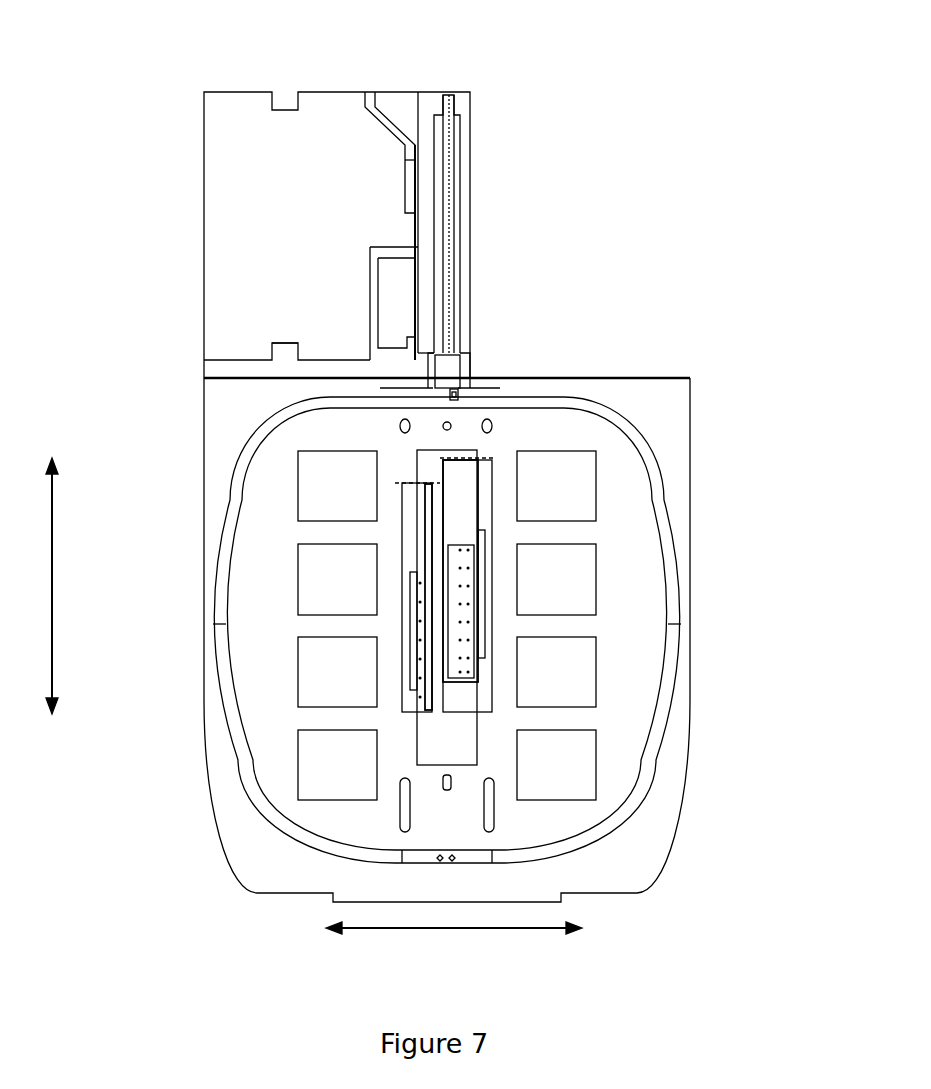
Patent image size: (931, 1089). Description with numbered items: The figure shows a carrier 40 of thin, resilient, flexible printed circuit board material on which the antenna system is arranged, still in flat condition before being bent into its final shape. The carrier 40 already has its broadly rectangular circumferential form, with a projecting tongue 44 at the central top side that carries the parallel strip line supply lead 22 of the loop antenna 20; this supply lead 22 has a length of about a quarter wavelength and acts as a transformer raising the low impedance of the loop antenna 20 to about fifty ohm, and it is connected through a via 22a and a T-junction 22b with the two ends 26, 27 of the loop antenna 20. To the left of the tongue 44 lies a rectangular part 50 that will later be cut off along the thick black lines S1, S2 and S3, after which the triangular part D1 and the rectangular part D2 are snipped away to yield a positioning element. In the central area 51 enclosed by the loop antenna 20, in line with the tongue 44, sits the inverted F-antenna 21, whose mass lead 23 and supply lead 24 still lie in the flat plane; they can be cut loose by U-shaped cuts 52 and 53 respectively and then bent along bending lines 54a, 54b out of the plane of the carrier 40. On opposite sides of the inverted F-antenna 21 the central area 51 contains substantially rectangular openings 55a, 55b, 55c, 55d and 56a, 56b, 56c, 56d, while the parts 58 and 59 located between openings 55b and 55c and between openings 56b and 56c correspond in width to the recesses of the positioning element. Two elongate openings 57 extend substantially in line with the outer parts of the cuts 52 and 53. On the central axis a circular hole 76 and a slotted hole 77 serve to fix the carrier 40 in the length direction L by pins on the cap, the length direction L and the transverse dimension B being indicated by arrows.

The loop antenna 20 is at (507, 640).
The inverted F-antenna 21 is at (613, 607).
The supply lead 22 is at (622, 203).
The via 22a is at (625, 294).
The T-junction 22b is at (642, 255).
The mass lead 23 is at (629, 587).
The supply lead 24 is at (610, 575).
The end of loop antenna 26 is at (622, 315).
The end of loop antenna 27 is at (259, 268).
The carrier 40 is at (387, 388).
The projecting tongue 44 is at (629, 182).
The rectangular part 50 is at (277, 216).
The central area 51 is at (176, 666).
The U-shaped cut 52 is at (626, 562).
The U-shaped cut 53 is at (258, 597).
The bending line 54a is at (631, 414).
The bending line 54b is at (259, 560).
The rectangular opening 55a is at (573, 508).
The rectangular opening 55b is at (573, 589).
The rectangular opening 55c is at (573, 682).
The rectangular opening 55d is at (573, 775).
The rectangular opening 56a is at (354, 496).
The rectangular opening 56b is at (354, 589).
The rectangular opening 56c is at (354, 682).
The rectangular opening 56d is at (354, 775).
The elongate openings 57 is at (447, 602).
The part between openings 58 is at (511, 630).
The part between openings 59 is at (207, 612).
The circular hole 76 is at (630, 342).
The slotted hole 77 is at (626, 836).
The cutting line S1 is at (251, 185).
The cutting line S2 is at (254, 228).
The cutting line S3 is at (191, 273).
The triangular part D1 is at (415, 121).
The rectangular part D2 is at (410, 321).
The length direction L is at (63, 586).
The width dimension B is at (454, 942).